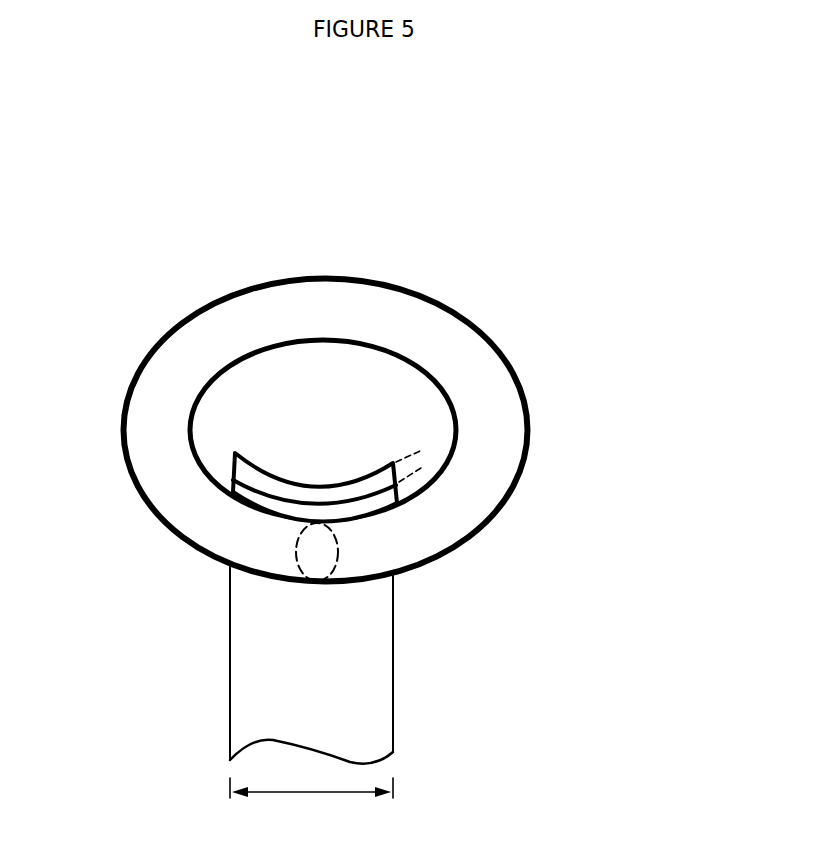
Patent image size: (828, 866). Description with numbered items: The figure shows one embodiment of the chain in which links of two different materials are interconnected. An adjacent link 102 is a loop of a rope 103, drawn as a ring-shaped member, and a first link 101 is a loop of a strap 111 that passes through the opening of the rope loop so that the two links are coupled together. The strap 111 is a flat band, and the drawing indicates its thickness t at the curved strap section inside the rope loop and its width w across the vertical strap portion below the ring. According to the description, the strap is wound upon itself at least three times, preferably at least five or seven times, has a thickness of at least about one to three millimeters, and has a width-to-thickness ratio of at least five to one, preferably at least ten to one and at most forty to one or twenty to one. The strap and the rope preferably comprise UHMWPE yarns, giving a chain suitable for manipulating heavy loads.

The first link 101 is at (395, 675).
The adjacent link 102 is at (492, 342).
The rope 103 is at (488, 450).
The strap 111 is at (260, 467).